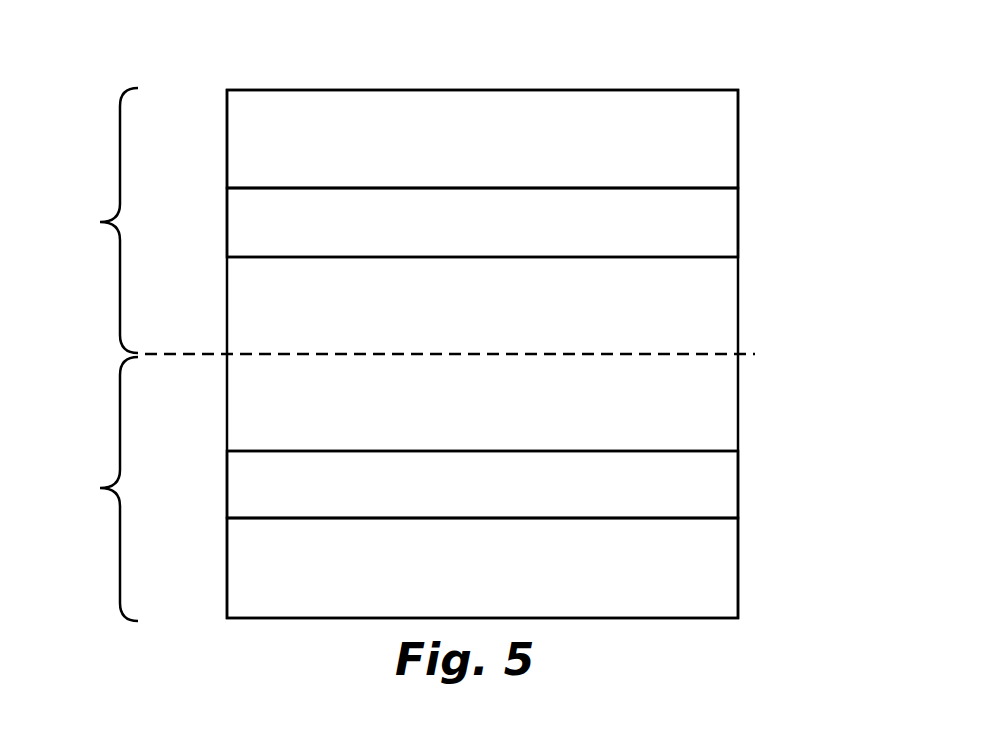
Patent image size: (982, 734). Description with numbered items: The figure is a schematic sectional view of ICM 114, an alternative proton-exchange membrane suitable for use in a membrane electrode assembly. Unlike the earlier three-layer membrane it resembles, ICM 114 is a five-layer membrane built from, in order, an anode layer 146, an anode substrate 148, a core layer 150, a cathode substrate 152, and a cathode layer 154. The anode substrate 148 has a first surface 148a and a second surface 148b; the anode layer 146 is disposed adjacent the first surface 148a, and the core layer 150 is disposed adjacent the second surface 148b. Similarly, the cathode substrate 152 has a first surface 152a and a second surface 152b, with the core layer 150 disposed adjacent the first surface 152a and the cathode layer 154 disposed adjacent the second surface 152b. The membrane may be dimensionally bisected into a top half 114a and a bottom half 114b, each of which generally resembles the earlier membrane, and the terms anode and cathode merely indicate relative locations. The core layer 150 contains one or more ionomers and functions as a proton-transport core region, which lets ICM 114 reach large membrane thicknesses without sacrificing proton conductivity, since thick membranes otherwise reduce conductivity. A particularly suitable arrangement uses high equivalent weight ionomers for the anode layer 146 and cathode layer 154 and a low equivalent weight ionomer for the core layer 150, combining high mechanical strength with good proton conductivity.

The ICM 114 is at (314, 55).
The top half 114a is at (84, 220).
The bottom half 114b is at (84, 489).
The anode layer 146 is at (708, 140).
The anode substrate 148 is at (715, 218).
The first surface 148a is at (255, 188).
The second surface 148b is at (255, 257).
The core layer 150 is at (712, 331).
The cathode substrate 152 is at (717, 490).
The first surface 152a is at (255, 451).
The second surface 152b is at (255, 518).
The cathode layer 154 is at (718, 573).